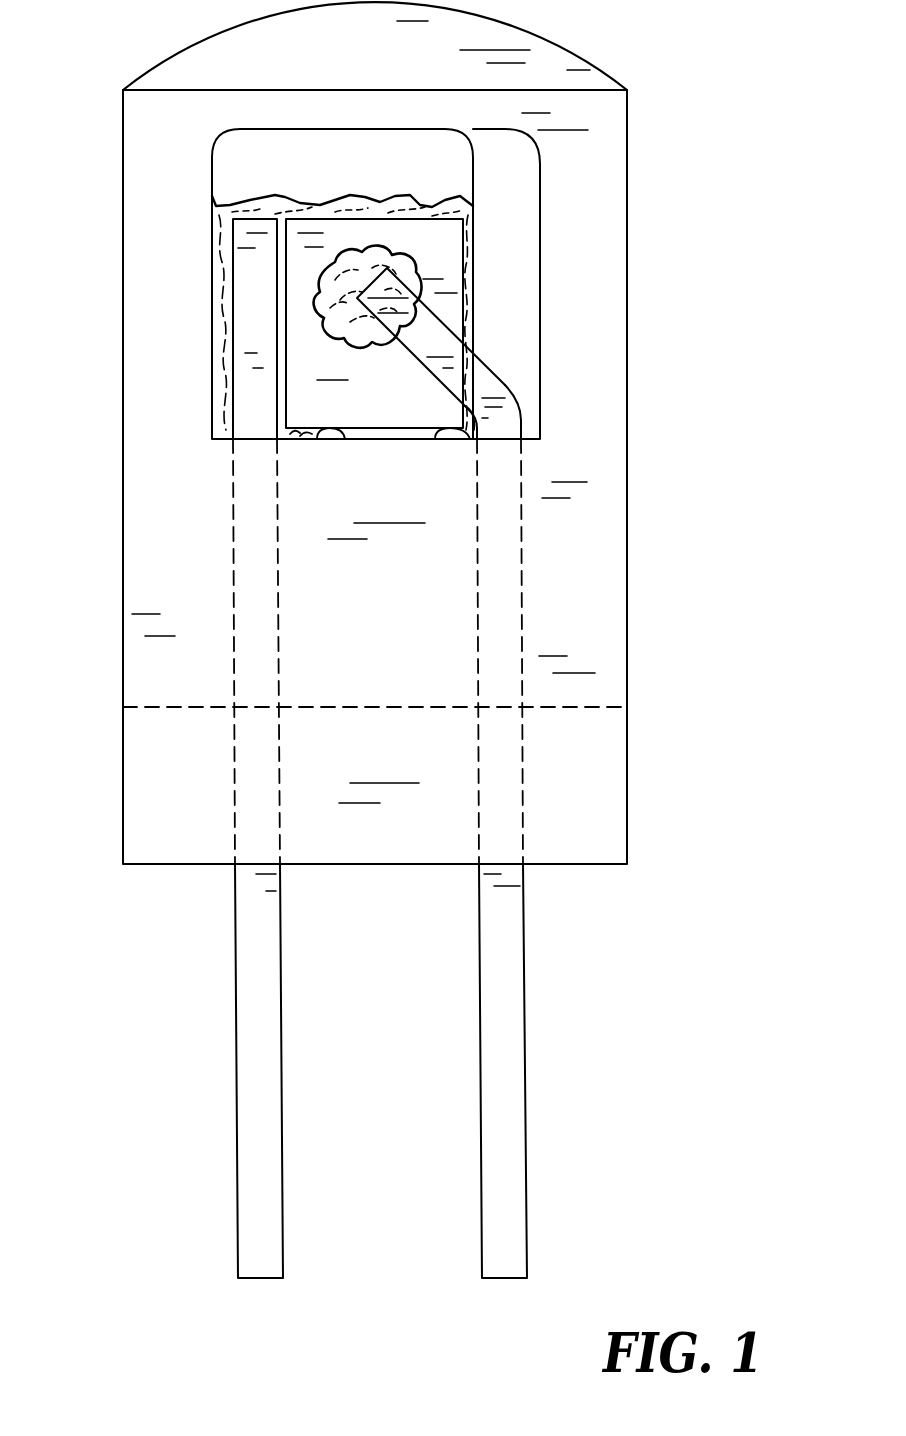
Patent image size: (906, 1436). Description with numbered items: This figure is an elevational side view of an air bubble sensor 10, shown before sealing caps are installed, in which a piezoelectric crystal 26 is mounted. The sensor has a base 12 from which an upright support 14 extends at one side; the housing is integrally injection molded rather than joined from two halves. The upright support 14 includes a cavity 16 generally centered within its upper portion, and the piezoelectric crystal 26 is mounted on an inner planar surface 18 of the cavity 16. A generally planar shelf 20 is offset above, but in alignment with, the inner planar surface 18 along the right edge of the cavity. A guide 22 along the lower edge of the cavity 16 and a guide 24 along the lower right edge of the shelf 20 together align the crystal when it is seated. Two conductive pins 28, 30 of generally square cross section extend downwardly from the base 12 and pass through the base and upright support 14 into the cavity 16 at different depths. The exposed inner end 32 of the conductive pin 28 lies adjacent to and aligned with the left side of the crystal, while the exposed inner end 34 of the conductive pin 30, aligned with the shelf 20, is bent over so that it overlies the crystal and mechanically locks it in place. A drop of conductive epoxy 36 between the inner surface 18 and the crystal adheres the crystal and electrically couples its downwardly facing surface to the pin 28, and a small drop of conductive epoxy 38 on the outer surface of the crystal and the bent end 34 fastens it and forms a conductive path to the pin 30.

The air bubble sensor 10 is at (147, 931).
The base 12 is at (628, 776).
The upright support 14 is at (628, 548).
The cavity 16 is at (462, 167).
The inner planar surface 18 is at (341, 176).
The shelf 20 is at (528, 212).
The guide 22 is at (385, 437).
The guide 24 is at (468, 335).
The piezoelectric crystal 26 is at (403, 394).
The conductive pin 28 is at (236, 1112).
The conductive pin 30 is at (479, 1062).
The exposed inner end 32 is at (242, 385).
The exposed inner end 34 is at (487, 365).
The conductive epoxy 36 is at (212, 232).
The conductive epoxy 38 is at (318, 297).